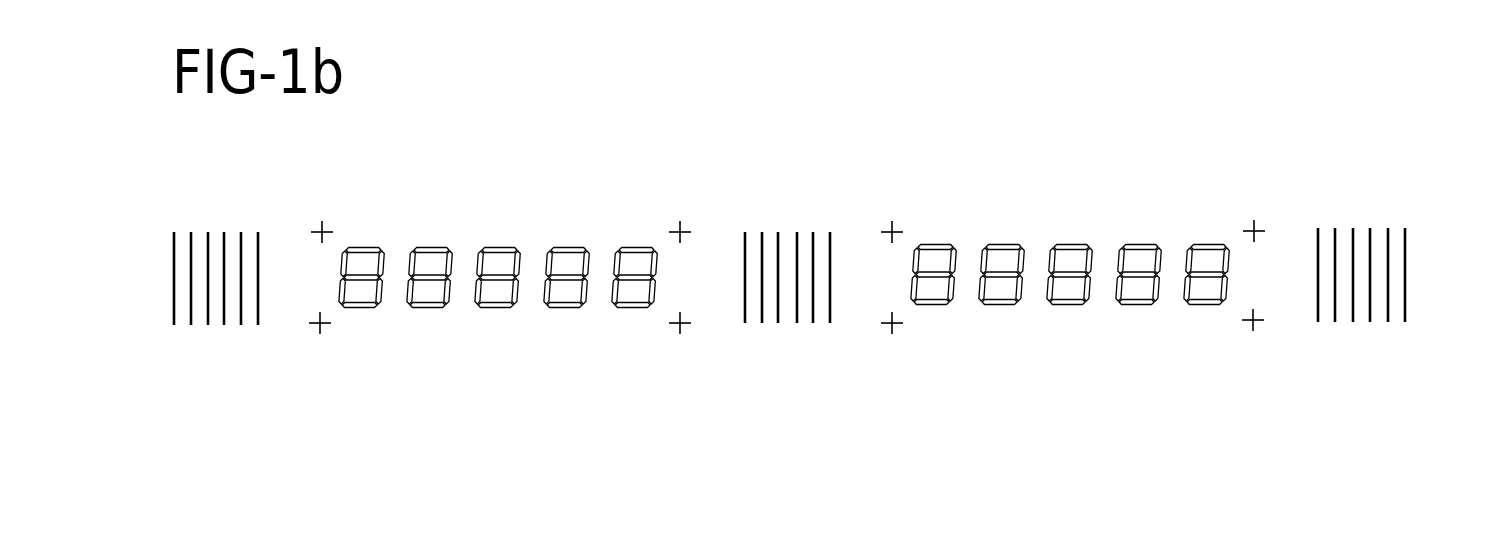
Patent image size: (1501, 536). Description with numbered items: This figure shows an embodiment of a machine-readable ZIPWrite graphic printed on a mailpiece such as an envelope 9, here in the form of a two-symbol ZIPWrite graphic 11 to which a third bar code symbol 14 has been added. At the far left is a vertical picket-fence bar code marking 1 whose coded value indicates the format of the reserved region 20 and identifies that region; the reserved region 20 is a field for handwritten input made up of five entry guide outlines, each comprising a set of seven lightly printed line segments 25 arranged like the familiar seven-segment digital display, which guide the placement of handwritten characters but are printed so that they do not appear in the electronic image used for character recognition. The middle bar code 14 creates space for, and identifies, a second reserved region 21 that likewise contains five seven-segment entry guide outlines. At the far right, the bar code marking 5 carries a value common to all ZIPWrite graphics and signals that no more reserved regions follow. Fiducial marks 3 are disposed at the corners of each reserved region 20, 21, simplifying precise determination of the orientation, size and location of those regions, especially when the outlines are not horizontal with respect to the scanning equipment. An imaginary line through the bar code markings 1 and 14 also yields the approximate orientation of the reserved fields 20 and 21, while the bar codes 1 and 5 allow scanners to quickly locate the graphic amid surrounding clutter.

The left-hand bar code marking 1 is at (173, 278).
The fiducial marks 3 is at (318, 230).
The right-hand bar code marking 5 is at (1407, 273).
The envelope 9 is at (503, 307).
The two-symbol ZIPWrite graphic 11 is at (1137, 305).
The third bar code symbol 14 is at (787, 230).
The reserved region 20 is at (497, 247).
The second reserved region 21 is at (1069, 246).
The line segments 25 is at (588, 258).